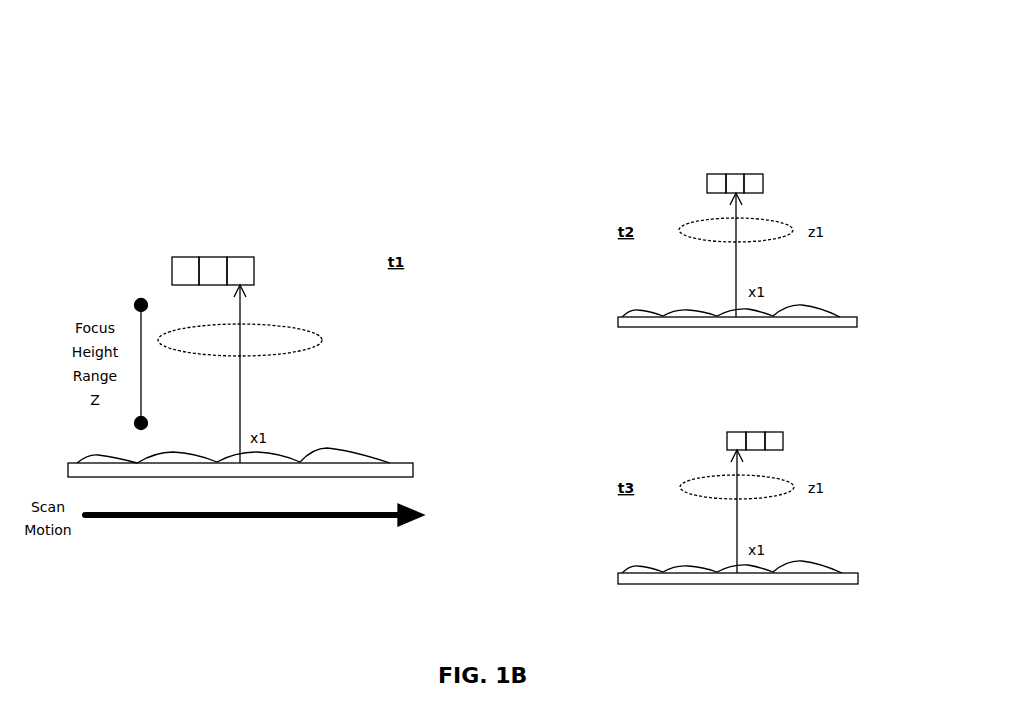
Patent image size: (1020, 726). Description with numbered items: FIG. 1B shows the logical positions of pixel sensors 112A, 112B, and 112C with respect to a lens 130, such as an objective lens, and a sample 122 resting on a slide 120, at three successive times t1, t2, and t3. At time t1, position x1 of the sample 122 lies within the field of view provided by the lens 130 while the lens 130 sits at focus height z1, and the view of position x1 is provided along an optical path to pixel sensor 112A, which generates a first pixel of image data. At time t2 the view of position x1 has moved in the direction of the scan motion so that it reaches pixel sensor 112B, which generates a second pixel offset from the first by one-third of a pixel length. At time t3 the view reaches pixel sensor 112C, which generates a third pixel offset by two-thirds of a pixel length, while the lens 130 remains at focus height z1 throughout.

The pixel sensor 112A is at (815, 413).
The pixel sensor 112B is at (756, 432).
The pixel sensor 112C is at (728, 432).
The lens 130 is at (322, 340).
The sample 122 is at (363, 455).
The slide 120 is at (414, 469).